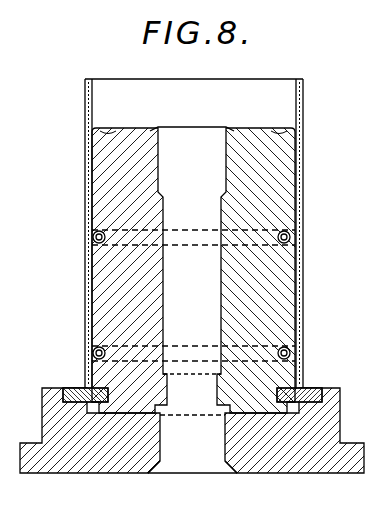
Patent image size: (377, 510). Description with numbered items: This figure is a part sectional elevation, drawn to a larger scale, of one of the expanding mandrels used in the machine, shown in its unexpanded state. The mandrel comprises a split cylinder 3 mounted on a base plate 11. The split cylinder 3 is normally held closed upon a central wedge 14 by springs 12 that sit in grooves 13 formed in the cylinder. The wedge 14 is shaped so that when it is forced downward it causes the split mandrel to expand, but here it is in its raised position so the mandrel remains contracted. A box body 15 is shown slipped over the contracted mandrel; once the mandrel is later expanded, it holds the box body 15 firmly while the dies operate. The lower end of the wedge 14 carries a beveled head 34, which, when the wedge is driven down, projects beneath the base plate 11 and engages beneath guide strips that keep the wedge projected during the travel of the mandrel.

The base plate 11 is at (289, 458).
The box body 15 is at (92, 103).
The split cylinder 3 is at (280, 150).
The central wedge 14 is at (204, 143).
The grooves 13 is at (291, 237).
The springs 12 is at (288, 242).
The beveled head 34 is at (202, 465).